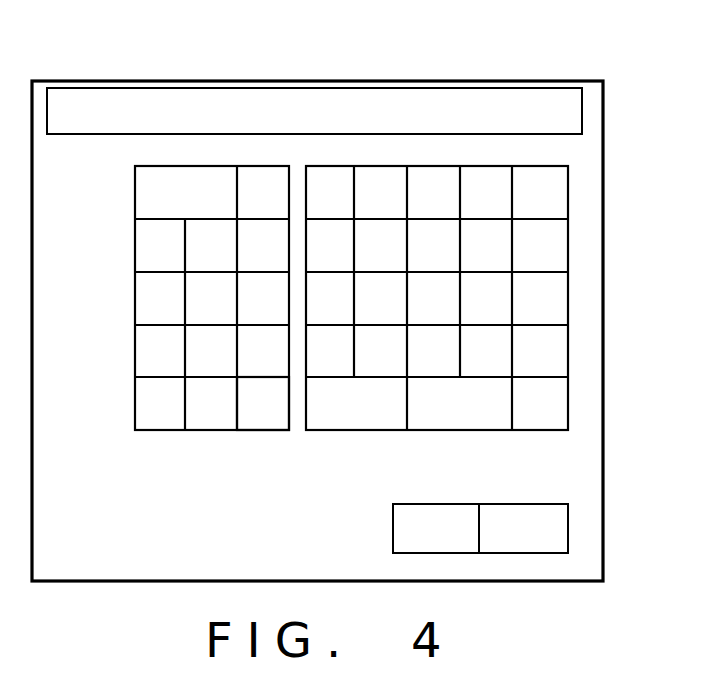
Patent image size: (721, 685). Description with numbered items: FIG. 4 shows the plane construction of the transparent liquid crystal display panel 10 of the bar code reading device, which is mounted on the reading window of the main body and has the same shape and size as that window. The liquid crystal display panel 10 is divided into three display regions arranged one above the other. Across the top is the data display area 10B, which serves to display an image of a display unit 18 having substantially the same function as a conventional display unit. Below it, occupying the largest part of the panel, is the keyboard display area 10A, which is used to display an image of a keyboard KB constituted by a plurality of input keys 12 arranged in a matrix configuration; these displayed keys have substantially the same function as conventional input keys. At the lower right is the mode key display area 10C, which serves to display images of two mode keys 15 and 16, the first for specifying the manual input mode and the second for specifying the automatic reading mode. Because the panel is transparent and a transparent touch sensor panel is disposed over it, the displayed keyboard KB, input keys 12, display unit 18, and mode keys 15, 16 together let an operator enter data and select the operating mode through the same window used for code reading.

The liquid crystal display panel 10 is at (499, 71).
The display unit 18 is at (560, 93).
The data display area 10B is at (617, 81).
The keyboard display area 10A is at (617, 165).
The keyboard KB is at (180, 450).
The input keys 12 is at (231, 428).
The mode key 15 is at (470, 545).
The mode key 16 is at (553, 549).
The mode key display area 10C is at (617, 497).